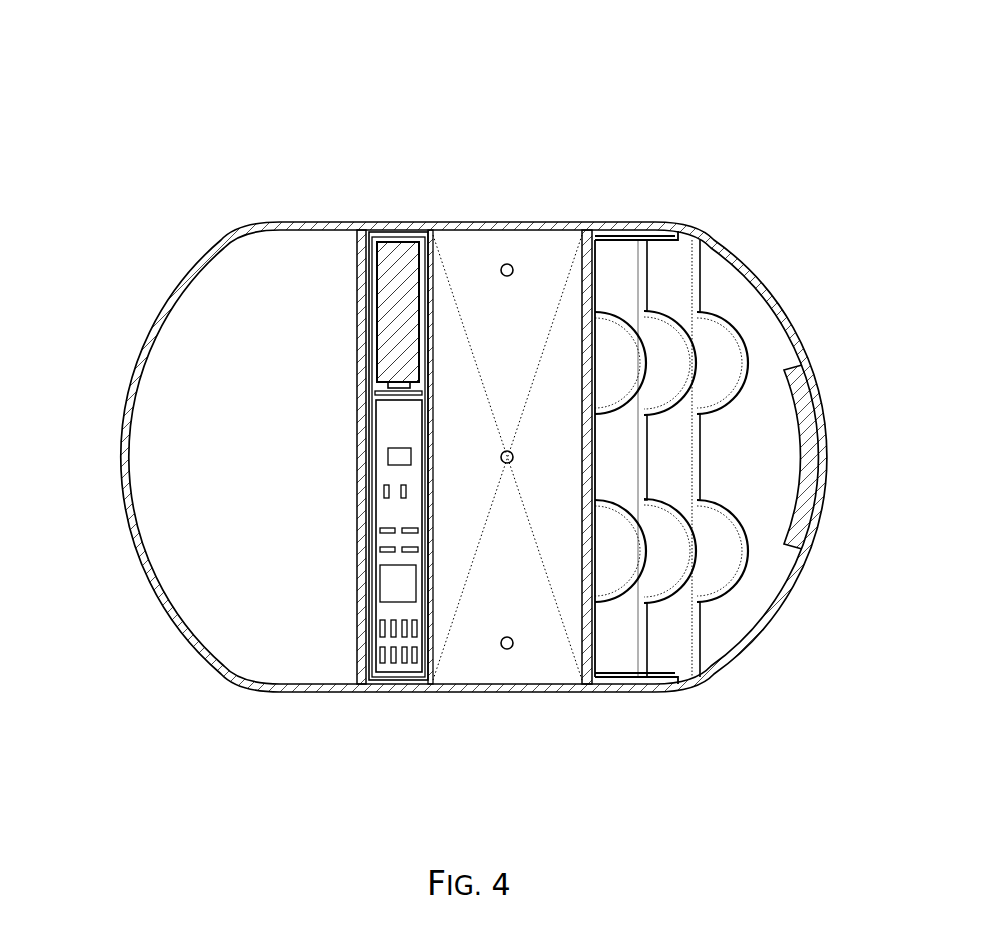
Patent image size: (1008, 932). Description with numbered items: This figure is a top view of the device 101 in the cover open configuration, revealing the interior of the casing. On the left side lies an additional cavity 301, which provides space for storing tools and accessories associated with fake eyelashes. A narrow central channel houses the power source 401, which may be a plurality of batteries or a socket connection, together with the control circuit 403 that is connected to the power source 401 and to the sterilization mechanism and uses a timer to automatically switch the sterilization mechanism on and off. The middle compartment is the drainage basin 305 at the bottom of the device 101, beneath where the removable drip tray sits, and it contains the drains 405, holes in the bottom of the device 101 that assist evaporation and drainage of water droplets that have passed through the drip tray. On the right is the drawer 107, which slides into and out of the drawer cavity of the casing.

The device 101 is at (163, 73).
The drawer 107 is at (763, 577).
The additional cavity 301 is at (233, 494).
The drainage basin 305 is at (535, 580).
The power source 401 is at (402, 267).
The control circuit 403 is at (397, 655).
The drain 405 is at (511, 262).